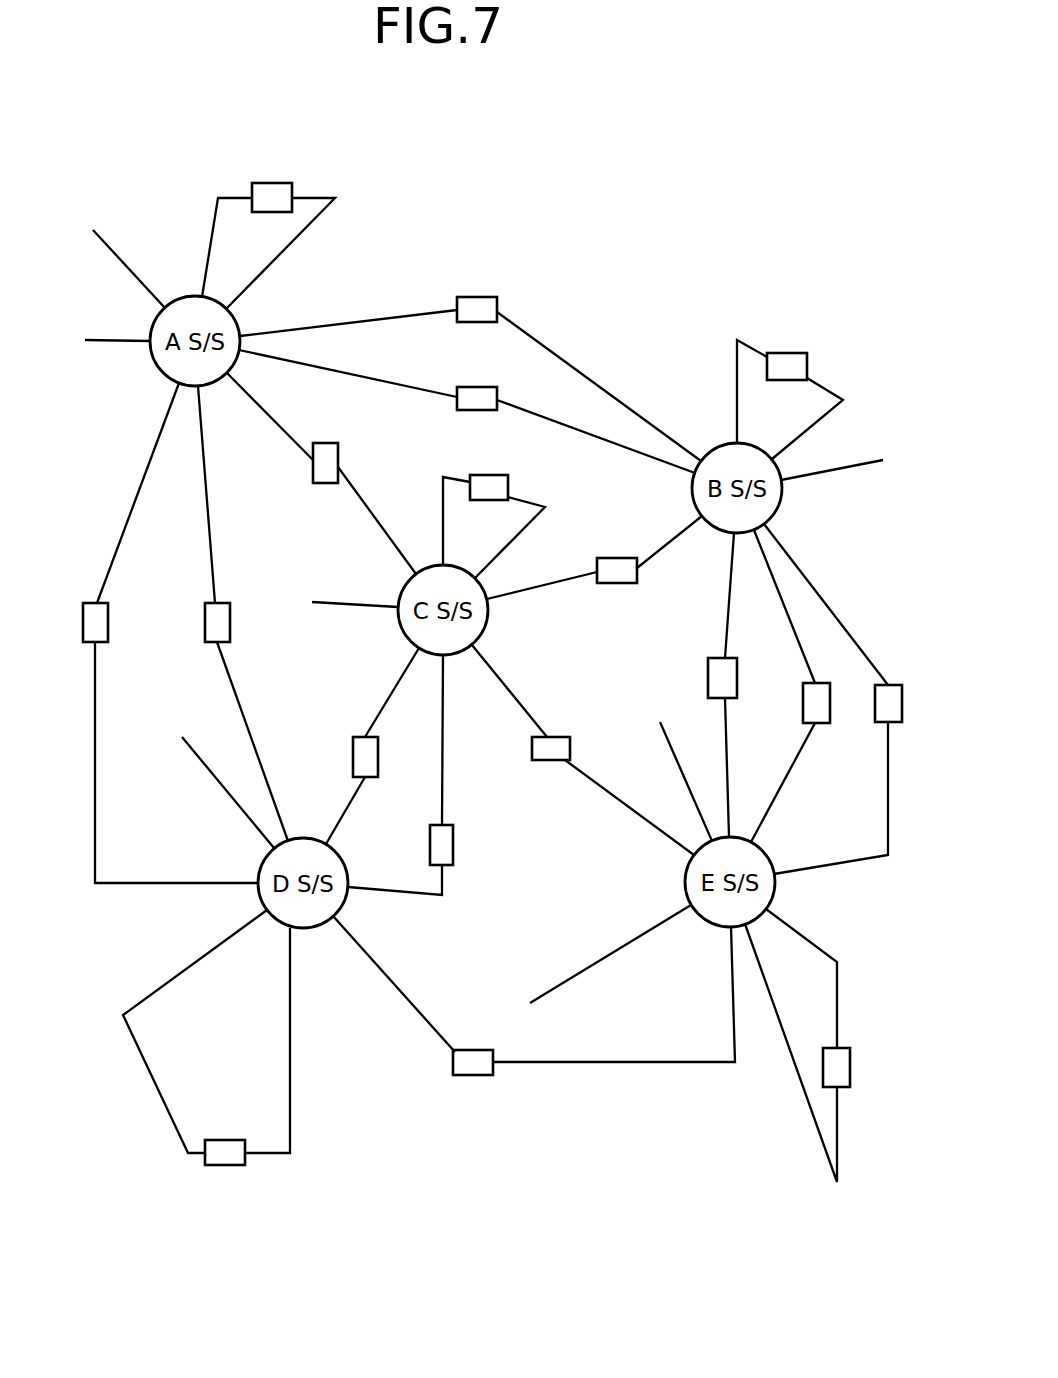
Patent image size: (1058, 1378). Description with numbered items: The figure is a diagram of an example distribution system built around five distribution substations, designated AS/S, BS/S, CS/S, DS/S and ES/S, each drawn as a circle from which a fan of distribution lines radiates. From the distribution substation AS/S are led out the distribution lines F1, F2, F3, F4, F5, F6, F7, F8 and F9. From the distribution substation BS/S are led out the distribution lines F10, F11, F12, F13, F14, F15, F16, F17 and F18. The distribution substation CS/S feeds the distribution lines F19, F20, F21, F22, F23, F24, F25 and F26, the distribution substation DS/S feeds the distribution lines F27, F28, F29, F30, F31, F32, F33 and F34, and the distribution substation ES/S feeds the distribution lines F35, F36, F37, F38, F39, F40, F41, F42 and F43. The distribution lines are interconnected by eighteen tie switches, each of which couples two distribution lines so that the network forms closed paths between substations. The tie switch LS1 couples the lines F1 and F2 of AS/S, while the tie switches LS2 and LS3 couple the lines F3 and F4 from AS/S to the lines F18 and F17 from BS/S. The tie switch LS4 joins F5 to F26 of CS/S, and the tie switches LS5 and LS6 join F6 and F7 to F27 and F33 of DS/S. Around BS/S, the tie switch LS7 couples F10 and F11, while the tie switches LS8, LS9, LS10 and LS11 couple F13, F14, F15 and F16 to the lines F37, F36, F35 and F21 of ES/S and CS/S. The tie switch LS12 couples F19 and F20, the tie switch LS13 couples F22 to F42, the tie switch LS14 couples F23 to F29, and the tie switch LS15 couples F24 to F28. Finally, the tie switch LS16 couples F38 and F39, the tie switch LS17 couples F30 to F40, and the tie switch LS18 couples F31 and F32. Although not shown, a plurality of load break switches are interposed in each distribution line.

The tie switch LS1 is at (272, 183).
The tie switch LS2 is at (477, 297).
The tie switch LS3 is at (477, 387).
The tie switch LS4 is at (326, 443).
The tie switch LS5 is at (230, 623).
The tie switch LS6 is at (108, 623).
The tie switch LS7 is at (787, 353).
The tie switch LS8 is at (892, 685).
The tie switch LS9 is at (803, 708).
The tie switch LS10 is at (708, 676).
The tie switch LS11 is at (617, 583).
The tie switch LS12 is at (489, 475).
The tie switch LS13 is at (551, 737).
The tie switch LS14 is at (453, 845).
The tie switch LS15 is at (353, 756).
The tie switch LS16 is at (850, 1068).
The tie switch LS17 is at (473, 1050).
The tie switch LS18 is at (225, 1140).
The distribution line F1 is at (215, 247).
The distribution line F2 is at (280, 253).
The distribution line F3 is at (348, 313).
The distribution line F4 is at (348, 373).
The distribution line F5 is at (270, 416).
The distribution line F6 is at (193, 494).
The distribution line F7 is at (138, 493).
The distribution line F8 is at (116, 328).
The distribution line F9 is at (129, 263).
The distribution line F10 is at (722, 391).
The distribution line F11 is at (799, 418).
The distribution line F12 is at (832, 485).
The distribution line F13 is at (826, 604).
The distribution line F14 is at (776, 606).
The distribution line F15 is at (706, 595).
The distribution line F16 is at (669, 538).
The distribution line F17 is at (596, 431).
The distribution line F18 is at (599, 386).
The distribution line F19 is at (472, 521).
The distribution line F20 is at (525, 537).
The distribution line F21 is at (542, 604).
The distribution line F22 is at (505, 691).
The distribution line F23 is at (418, 740).
The distribution line F24 is at (384, 692).
The distribution line F25 is at (355, 588).
The distribution line F26 is at (382, 520).
The distribution line F27 is at (252, 741).
The distribution line F28 is at (356, 810).
The distribution line F29 is at (395, 903).
The distribution line F30 is at (394, 984).
The distribution line F31 is at (265, 1040).
The distribution line F32 is at (195, 1031).
The distribution line F33 is at (176, 763).
The distribution line F34 is at (219, 792).
The distribution line F35 is at (753, 767).
The distribution line F36 is at (802, 782).
The distribution line F37 is at (831, 816).
The distribution line F38 is at (801, 978).
The distribution line F39 is at (791, 1053).
The distribution line F40 is at (614, 994).
The distribution line F41 is at (610, 954).
The distribution line F42 is at (629, 818).
The distribution line F43 is at (669, 781).